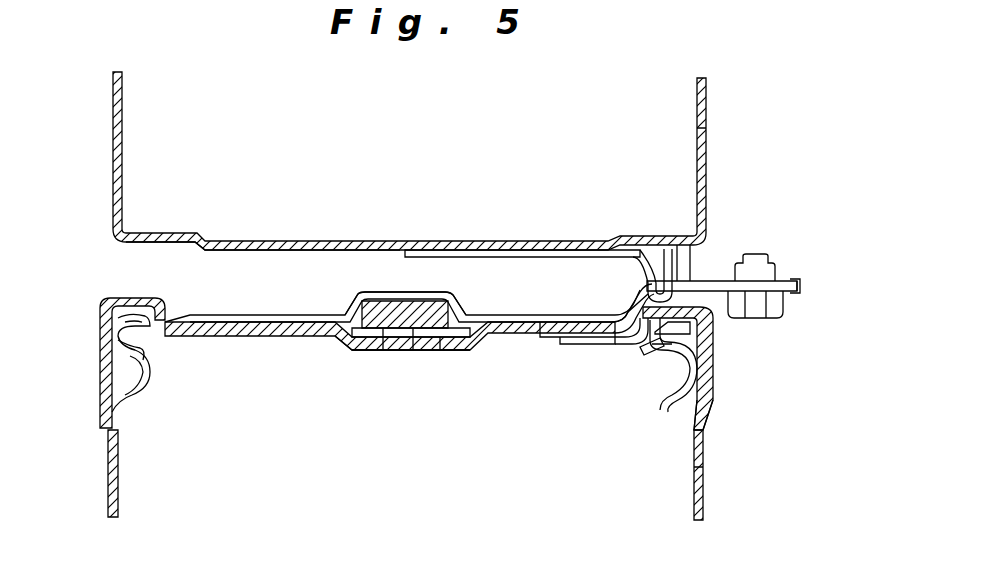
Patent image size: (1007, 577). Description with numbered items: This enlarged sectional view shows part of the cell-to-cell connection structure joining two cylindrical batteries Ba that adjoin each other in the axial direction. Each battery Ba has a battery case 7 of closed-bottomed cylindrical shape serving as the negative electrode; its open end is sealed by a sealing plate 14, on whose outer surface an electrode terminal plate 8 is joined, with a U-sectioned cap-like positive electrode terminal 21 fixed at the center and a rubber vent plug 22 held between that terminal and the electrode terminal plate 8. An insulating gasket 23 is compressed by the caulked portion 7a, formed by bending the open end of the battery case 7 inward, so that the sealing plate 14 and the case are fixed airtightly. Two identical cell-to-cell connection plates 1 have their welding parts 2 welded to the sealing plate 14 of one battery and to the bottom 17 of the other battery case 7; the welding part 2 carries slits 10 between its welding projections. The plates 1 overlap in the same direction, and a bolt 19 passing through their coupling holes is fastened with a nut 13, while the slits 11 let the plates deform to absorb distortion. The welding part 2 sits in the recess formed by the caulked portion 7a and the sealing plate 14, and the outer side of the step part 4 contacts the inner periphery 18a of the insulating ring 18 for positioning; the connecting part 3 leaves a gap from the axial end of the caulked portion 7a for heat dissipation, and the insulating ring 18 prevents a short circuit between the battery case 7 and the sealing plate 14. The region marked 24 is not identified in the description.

The cell-to-cell connection plate 1 is at (712, 278).
The welding part 2 is at (628, 300).
The connecting part 3 is at (678, 296).
The step part 4 is at (656, 283).
The battery case 7 is at (706, 100).
The caulked portion 7a is at (132, 318).
The electrode terminal plate 8 is at (432, 336).
The slits 10 is at (522, 258).
The slits 11 is at (799, 288).
The nut 13 is at (777, 272).
The sealing plate 14 is at (532, 338).
The bottom 17 is at (305, 249).
The insulating ring 18 is at (708, 368).
The inner periphery 18a is at (655, 342).
The bolt 19 is at (755, 306).
The cap-like positive electrode terminal 21 is at (388, 293).
The rubber vent plug 22 is at (400, 323).
The insulating gasket 23 is at (709, 400).
The recess 24 is at (466, 356).
The cylindrical battery Ba is at (706, 128).